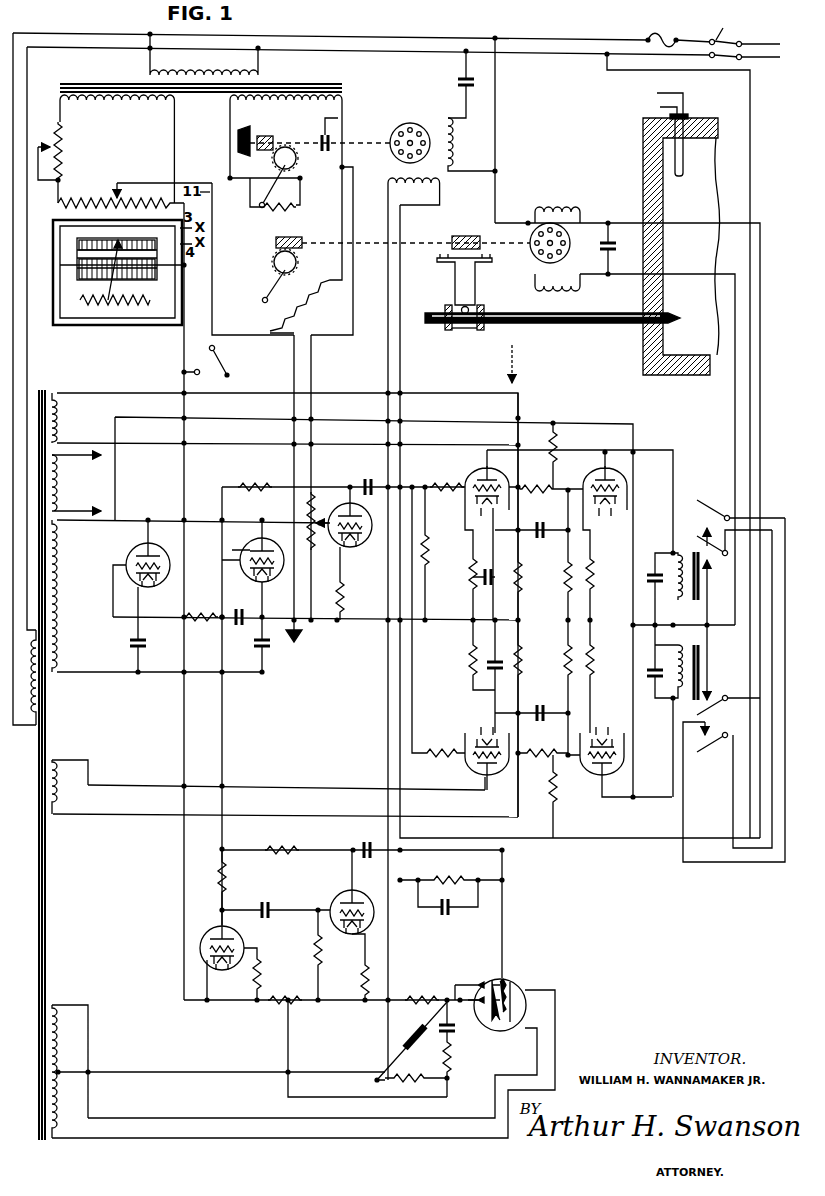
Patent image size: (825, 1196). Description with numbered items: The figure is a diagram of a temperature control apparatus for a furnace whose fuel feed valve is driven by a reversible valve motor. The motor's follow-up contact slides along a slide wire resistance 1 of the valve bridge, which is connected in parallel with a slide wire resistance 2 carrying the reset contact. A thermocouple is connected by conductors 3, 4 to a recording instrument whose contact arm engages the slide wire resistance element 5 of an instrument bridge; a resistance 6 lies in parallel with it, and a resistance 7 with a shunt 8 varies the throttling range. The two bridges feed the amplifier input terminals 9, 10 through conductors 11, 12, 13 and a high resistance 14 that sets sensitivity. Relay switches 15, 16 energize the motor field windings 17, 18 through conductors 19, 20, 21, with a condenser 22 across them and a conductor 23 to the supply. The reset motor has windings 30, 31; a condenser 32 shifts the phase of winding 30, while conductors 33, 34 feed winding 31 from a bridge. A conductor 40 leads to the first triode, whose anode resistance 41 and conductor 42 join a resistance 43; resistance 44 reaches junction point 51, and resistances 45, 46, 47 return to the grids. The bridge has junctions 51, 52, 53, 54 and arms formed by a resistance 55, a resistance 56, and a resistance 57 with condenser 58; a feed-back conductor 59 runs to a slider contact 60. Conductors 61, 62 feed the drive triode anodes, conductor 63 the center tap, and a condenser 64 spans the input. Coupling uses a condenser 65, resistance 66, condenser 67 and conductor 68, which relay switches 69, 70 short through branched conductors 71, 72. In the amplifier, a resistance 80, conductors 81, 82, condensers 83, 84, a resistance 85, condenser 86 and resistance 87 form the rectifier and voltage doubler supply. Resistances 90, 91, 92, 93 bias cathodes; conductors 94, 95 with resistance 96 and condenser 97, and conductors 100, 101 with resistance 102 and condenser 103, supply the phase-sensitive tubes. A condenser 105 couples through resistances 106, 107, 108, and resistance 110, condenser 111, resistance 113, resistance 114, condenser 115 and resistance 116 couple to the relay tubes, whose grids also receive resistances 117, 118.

The slide wire resistance 1 is at (300, 328).
The slide wire resistance 2 is at (256, 206).
The conductor 3 is at (672, 90).
The conductor 4 is at (663, 108).
The slide wire resistance element 5 is at (146, 298).
The resistance 6 is at (121, 206).
The resistance 7 is at (62, 148).
The shunt 8 is at (42, 152).
The input terminal 9 is at (316, 520).
The input terminal 10 is at (330, 624).
The conductor 11 is at (294, 360).
The conductor 12 is at (202, 265).
The conductor 13 is at (311, 360).
The resistance 14 is at (304, 520).
The relay switch 15 is at (700, 532).
The relay switch 16 is at (696, 710).
The field winding 17 is at (550, 288).
The field winding 18 is at (552, 204).
The conductor 19 is at (674, 274).
The conductor 20 is at (674, 223).
The conductor 21 is at (750, 112).
The condenser 22 is at (612, 248).
The conductor 23 is at (496, 118).
The field winding 30 is at (454, 147).
The field winding 31 is at (414, 191).
The condenser 32 is at (456, 82).
The conductor 33 is at (400, 221).
The conductor 34 is at (388, 215).
The conductor 40 is at (178, 868).
The resistance 41 is at (220, 880).
The conductor 42 is at (222, 724).
The resistance 43 is at (284, 846).
The resistance 44 is at (362, 976).
The resistance 45 is at (331, 992).
The resistance 46 is at (265, 978).
The resistance 47 is at (312, 947).
The junction point 51 is at (388, 998).
The junction 52 is at (452, 1079).
The junction 53 is at (460, 998).
The junction 54 is at (397, 1047).
The resistance 55 is at (442, 985).
The resistance 56 is at (417, 1084).
The resistance 57 is at (452, 1060).
The condenser 58 is at (444, 1038).
The conductor 59 is at (116, 470).
The slider contact 60 is at (285, 1020).
The conductor 61 is at (188, 1140).
The conductor 62 is at (194, 1118).
The conductor 63 is at (188, 1072).
The condenser 64 is at (412, 1038).
The condenser 65 is at (368, 840).
The resistance 66 is at (442, 876).
The condenser 67 is at (446, 916).
The conductor 68 is at (504, 910).
The relay switch 69 is at (706, 500).
The relay switch 70 is at (700, 748).
The branched conductor 71 is at (608, 858).
The branched conductor 72 is at (564, 844).
The resistance 80 is at (343, 584).
The conductor 81 is at (132, 516).
The conductor 82 is at (108, 672).
The condenser 83 is at (128, 642).
The condenser 84 is at (268, 648).
The resistance 85 is at (199, 603).
The condenser 86 is at (238, 628).
The resistance 87 is at (260, 478).
The resistance 90 is at (594, 577).
The resistance 91 is at (596, 661).
The resistance 92 is at (470, 574).
The resistance 93 is at (470, 667).
The conductor 94 is at (476, 443).
The conductor 95 is at (446, 393).
The resistance 96 is at (522, 570).
The condenser 97 is at (482, 570).
The conductor 100 is at (278, 790).
The conductor 101 is at (276, 816).
The resistance 102 is at (562, 676).
The condenser 103 is at (490, 685).
The condenser 105 is at (370, 474).
The resistance 106 is at (432, 492).
The resistance 107 is at (444, 750).
The resistance 108 is at (428, 546).
The resistance 110 is at (542, 482).
The condenser 111 is at (542, 520).
The resistance 113 is at (552, 566).
The resistance 114 is at (540, 764).
The condenser 115 is at (540, 722).
The resistance 116 is at (522, 657).
The resistance 117 is at (556, 448).
The resistance 118 is at (556, 800).